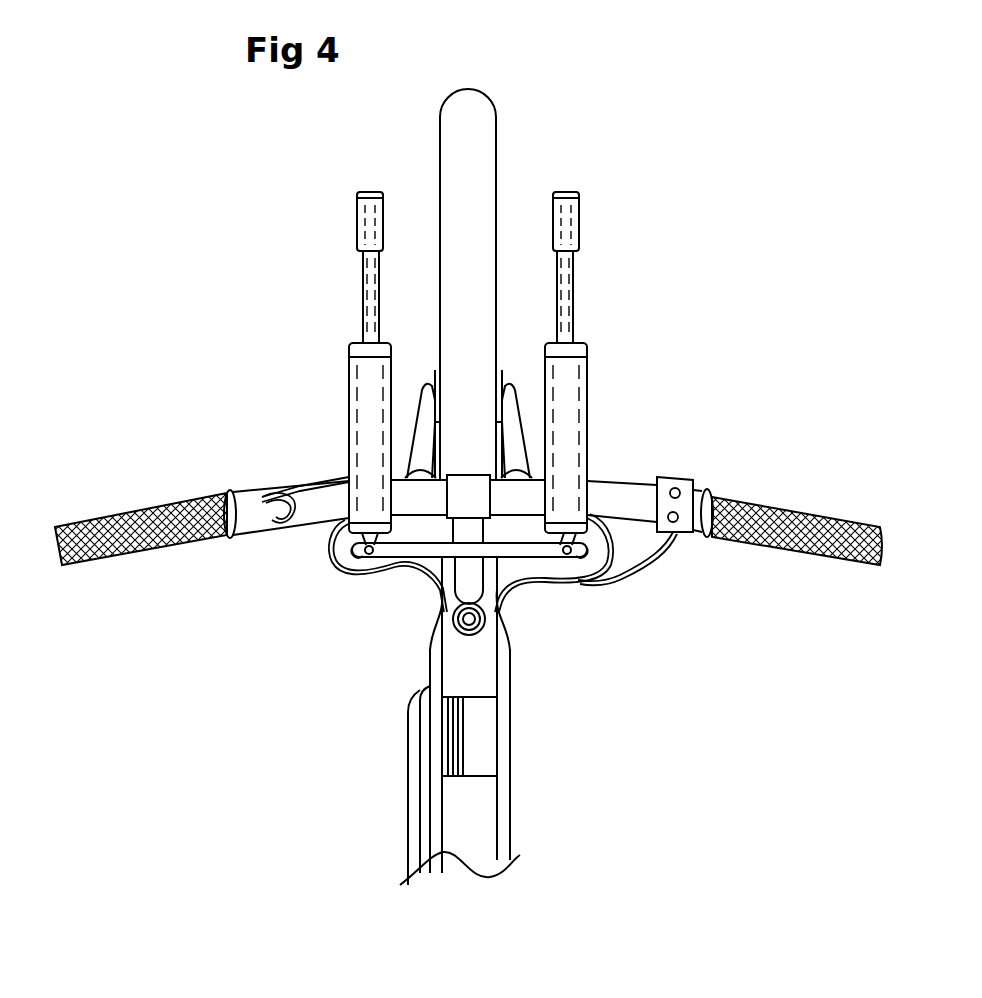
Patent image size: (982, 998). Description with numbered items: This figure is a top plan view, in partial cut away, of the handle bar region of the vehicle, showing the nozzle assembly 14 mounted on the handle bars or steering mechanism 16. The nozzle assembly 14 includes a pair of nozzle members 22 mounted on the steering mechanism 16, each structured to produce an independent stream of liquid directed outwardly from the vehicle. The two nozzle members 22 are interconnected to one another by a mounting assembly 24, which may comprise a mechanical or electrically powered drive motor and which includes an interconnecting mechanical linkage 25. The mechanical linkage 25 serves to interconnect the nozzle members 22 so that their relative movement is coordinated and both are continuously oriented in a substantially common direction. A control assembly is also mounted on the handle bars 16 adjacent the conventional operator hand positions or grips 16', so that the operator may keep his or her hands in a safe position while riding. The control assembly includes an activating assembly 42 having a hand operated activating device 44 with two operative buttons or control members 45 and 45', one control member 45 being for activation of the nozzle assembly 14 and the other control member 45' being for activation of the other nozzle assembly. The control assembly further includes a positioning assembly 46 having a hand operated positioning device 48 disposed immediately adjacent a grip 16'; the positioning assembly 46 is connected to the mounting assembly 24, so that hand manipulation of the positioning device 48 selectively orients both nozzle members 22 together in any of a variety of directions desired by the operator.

The nozzle assembly 14 is at (672, 290).
The steering mechanism 16 is at (467, 450).
The grip 16' is at (468, 586).
The nozzle member 22 is at (362, 308).
The mounting assembly 24 is at (533, 583).
The mechanical linkage 25 is at (369, 557).
The activating assembly 42 is at (677, 578).
The hand operated activating device 44 is at (677, 478).
The control member 45 is at (740, 459).
The control member 45' is at (732, 570).
The positioning assembly 46 is at (328, 438).
The hand operated positioning device 48 is at (250, 492).